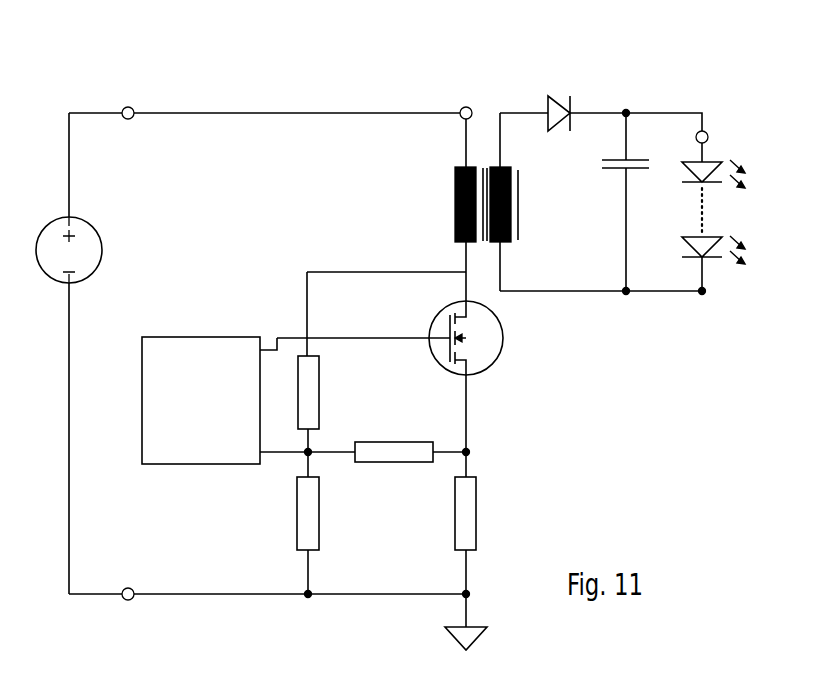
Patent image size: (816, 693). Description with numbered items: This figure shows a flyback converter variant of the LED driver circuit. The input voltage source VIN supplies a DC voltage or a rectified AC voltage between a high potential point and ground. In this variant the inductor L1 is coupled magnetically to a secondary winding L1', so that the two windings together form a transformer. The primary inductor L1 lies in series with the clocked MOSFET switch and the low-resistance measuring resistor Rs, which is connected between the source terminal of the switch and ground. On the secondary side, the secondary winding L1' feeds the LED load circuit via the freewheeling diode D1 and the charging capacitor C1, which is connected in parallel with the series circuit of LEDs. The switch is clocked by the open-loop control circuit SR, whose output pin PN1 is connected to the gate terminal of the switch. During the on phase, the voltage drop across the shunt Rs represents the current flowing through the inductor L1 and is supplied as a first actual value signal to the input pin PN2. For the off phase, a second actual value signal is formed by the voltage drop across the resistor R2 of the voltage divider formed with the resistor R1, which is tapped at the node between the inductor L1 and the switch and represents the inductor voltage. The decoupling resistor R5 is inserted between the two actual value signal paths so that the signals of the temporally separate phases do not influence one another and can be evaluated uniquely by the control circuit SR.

The input voltage source VIN is at (63, 243).
The inductor L1 is at (460, 210).
The secondary winding L1' is at (517, 202).
The freewheeling diode D1 is at (559, 102).
The charging capacitor C1 is at (615, 202).
The open-loop control circuit SR is at (201, 400).
The output pin PN1 is at (252, 349).
The input pin PN2 is at (291, 455).
The resistor of voltage divider R1 is at (297, 416).
The resistor of voltage divider R2 is at (296, 535).
The decoupling resistor R5 is at (410, 442).
The measuring resistor Rs is at (454, 552).